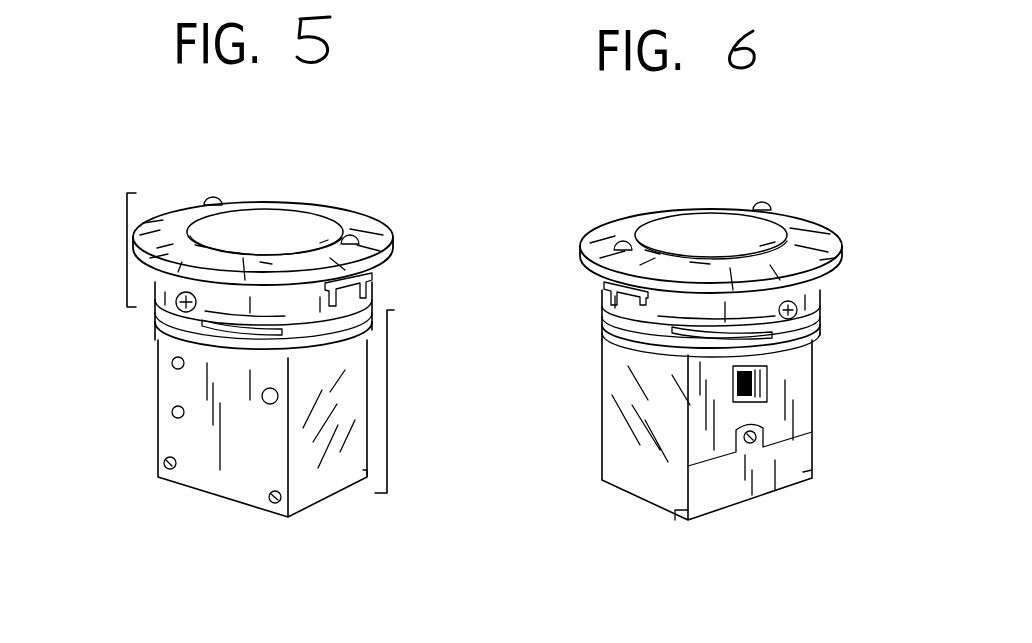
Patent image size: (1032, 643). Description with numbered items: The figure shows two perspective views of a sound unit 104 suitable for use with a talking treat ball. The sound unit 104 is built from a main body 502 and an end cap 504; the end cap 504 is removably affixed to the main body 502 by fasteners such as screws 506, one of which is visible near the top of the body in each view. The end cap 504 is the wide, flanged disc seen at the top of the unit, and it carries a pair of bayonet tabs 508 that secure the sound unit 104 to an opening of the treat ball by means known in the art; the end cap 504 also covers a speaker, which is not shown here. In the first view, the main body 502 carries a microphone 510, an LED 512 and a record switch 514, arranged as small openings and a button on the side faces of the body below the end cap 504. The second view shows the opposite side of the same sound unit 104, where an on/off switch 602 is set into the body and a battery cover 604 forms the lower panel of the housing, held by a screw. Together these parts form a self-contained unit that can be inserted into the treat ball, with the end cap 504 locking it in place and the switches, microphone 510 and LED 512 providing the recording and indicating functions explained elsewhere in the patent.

In FIG. 5, the sound unit 104 is at (322, 155).
In FIG. 6, the sound unit 104 is at (752, 162).
In FIG. 5, the main body 502 is at (396, 398).
In FIG. 5, the end cap 504 is at (127, 258).
In FIG. 5, the screws 506 is at (182, 306).
In FIG. 6, the screws 506 is at (797, 314).
In FIG. 5, the bayonet tabs 508 is at (358, 280).
In FIG. 6, the bayonet tabs 508 is at (604, 288).
In FIG. 5, the microphone 510 is at (172, 365).
In FIG. 5, the LED 512 is at (172, 415).
In FIG. 5, the record switch 514 is at (266, 404).
In FIG. 6, the on/off switch 602 is at (765, 378).
In FIG. 6, the battery cover 604 is at (742, 486).